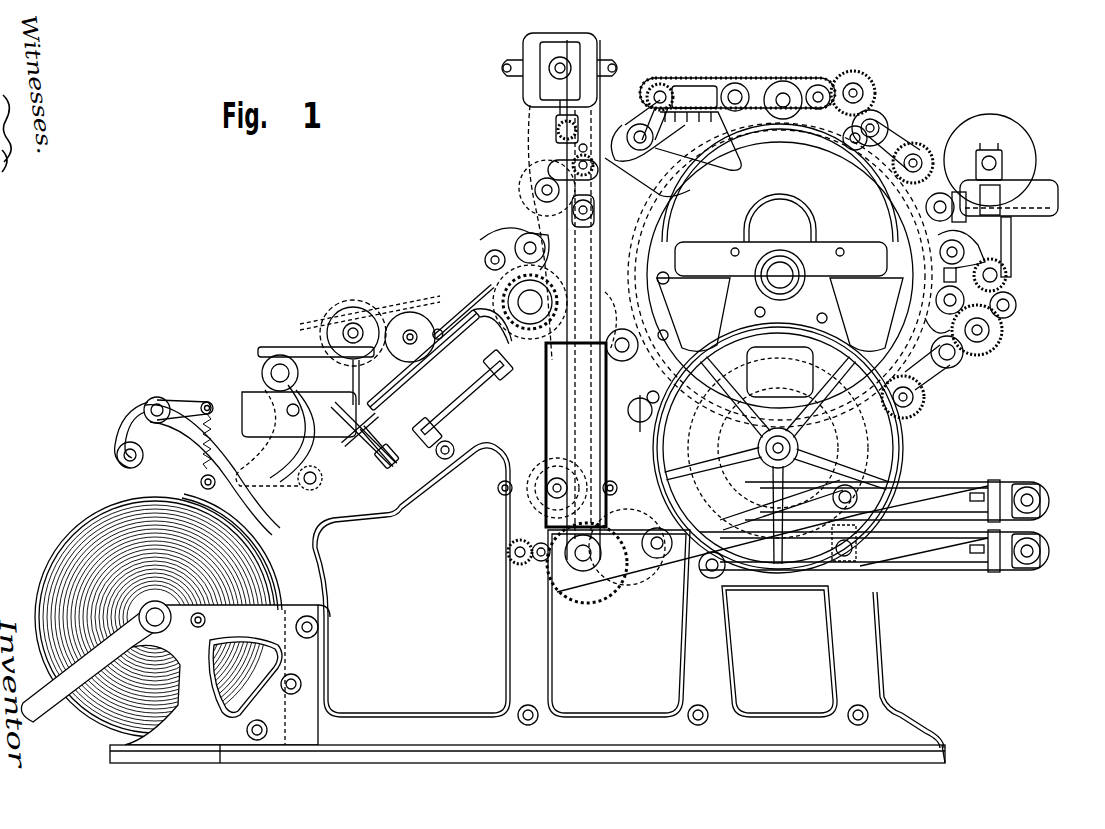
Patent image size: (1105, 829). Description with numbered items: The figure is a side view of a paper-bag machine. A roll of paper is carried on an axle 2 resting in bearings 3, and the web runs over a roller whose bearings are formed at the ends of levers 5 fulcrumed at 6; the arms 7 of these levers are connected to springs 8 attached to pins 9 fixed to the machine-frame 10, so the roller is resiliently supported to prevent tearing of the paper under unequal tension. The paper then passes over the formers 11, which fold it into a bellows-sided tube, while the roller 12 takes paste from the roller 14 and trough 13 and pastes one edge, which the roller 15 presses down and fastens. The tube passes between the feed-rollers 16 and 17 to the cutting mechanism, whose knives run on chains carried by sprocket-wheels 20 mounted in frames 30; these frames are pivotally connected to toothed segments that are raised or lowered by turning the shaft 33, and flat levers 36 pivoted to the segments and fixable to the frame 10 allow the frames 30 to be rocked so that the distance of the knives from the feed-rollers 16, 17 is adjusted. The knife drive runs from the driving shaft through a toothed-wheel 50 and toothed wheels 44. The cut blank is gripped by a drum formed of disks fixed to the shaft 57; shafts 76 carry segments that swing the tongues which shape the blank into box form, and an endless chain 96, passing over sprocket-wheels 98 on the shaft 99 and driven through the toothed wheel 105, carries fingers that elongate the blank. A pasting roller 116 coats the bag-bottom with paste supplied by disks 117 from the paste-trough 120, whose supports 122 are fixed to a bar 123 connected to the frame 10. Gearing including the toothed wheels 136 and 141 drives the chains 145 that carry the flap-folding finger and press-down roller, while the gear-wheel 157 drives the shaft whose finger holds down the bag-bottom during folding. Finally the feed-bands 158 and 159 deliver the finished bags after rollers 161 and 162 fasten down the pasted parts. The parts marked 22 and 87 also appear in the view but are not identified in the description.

The axle 2 is at (150, 624).
The bearings 3 is at (158, 623).
The levers 5 is at (126, 435).
The fulcrum 6 is at (157, 405).
The arms 7 is at (185, 401).
The springs 8 is at (213, 441).
The pins 9 is at (213, 486).
The machine-frame 10 is at (483, 443).
The formers 11 is at (432, 394).
The roller 12 is at (410, 337).
The trough 13 is at (313, 418).
The roller 14 is at (353, 323).
The roller 15 is at (398, 311).
The feed-roller 16 is at (528, 240).
The feed-roller 17 is at (530, 302).
The sprocket-wheels 20 is at (559, 63).
The roller 22 is at (535, 185).
The frames 30 is at (552, 300).
The shaft 33 is at (518, 552).
The flat levers 36 is at (593, 409).
The toothed wheels 44 is at (587, 568).
The toothed-wheel 50 is at (708, 550).
The shaft 57 is at (780, 275).
The shafts 76 is at (778, 448).
The lever 87 is at (647, 148).
The endless chain 96 is at (753, 105).
The sprocket-wheels 98 is at (698, 128).
The shaft 99 is at (657, 100).
The toothed wheel 105 is at (867, 102).
The pasting roller 116 is at (906, 151).
The disks 117 is at (990, 160).
The paste-trough 120 is at (1026, 198).
The supports 122 is at (987, 234).
The bar 123 is at (994, 293).
The toothed wheel 136 is at (994, 260).
The toothed wheel 141 is at (976, 336).
The chains 145 is at (941, 363).
The gear-wheel 157 is at (917, 403).
The feed-band 158 is at (916, 501).
The feed-band 159 is at (893, 551).
The roller 161 is at (788, 505).
The roller 162 is at (777, 556).